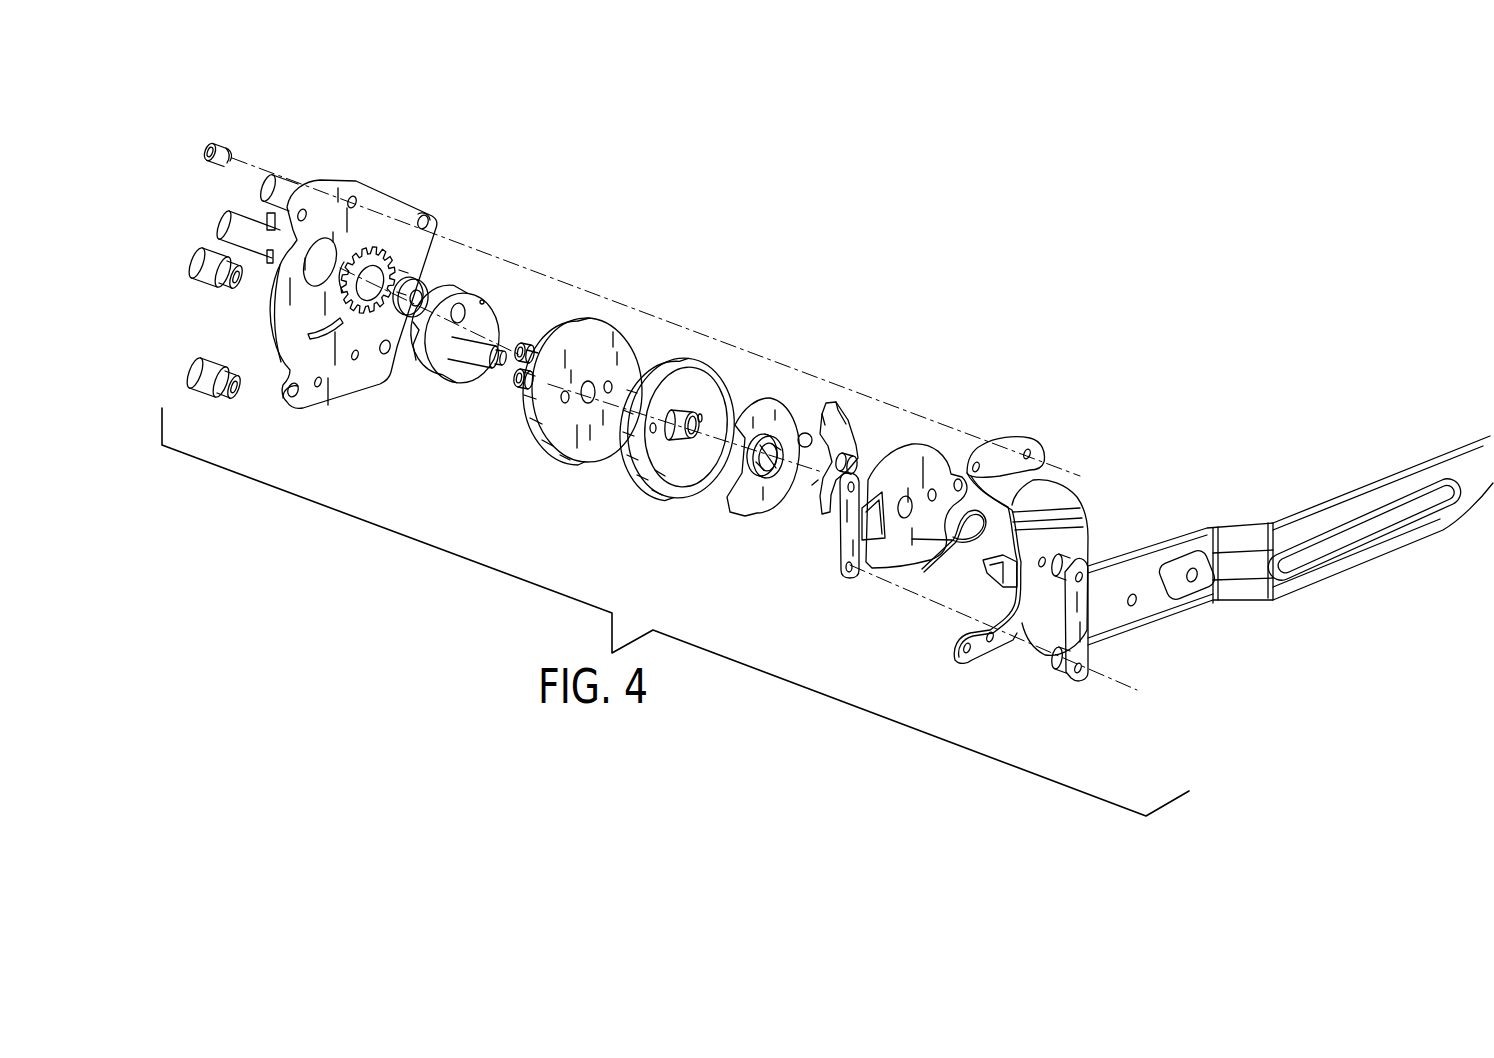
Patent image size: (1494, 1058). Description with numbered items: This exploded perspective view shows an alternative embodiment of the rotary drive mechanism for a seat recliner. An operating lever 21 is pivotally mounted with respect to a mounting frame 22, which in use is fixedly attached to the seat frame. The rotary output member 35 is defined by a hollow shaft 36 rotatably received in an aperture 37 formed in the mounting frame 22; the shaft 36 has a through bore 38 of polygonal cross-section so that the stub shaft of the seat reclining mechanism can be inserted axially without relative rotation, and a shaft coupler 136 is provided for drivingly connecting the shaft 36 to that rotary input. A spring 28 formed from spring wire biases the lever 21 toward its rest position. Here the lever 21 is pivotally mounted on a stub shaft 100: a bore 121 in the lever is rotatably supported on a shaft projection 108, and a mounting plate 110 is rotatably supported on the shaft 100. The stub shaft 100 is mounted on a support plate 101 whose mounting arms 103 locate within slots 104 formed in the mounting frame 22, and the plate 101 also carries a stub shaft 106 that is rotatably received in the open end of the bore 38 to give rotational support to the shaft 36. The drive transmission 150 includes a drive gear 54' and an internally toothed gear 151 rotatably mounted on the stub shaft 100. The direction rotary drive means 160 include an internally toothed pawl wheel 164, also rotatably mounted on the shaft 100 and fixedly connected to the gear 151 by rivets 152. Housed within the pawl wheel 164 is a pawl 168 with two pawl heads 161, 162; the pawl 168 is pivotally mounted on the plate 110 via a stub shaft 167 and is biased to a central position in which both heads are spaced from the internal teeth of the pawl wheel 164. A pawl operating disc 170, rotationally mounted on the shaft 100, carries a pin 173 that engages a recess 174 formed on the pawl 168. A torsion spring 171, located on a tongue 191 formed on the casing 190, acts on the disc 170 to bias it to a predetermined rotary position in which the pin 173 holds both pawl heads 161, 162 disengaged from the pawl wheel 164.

The operating lever 21 is at (1380, 482).
The mounting frame 22 is at (318, 192).
The spring 28 is at (933, 590).
The rotary output member 35 is at (383, 240).
The hollow shaft 36 is at (345, 262).
The aperture 37 is at (308, 271).
The through bore 38 is at (408, 290).
The drive gear 54' is at (417, 238).
The stub shaft 100 is at (455, 345).
The support plate 101 is at (488, 318).
The mounting arms 103 is at (417, 340).
The slots 104 is at (288, 293).
The stub shaft 106 is at (424, 297).
The shaft projection 108 is at (497, 362).
The mounting plate 110 is at (910, 447).
The bore 121 is at (1135, 602).
The shaft coupler 136 is at (205, 216).
The drive transmission 150 is at (685, 228).
The internally toothed gear 151 is at (602, 332).
The rivets 152 is at (530, 346).
The direction rotary drive means 160 is at (690, 510).
The pawl head 161 is at (825, 425).
The pawl head 162 is at (848, 535).
The internally toothed pawl wheel 164 is at (700, 360).
The stub shaft 167 is at (855, 452).
The pawl 168 is at (815, 503).
The pawl operating disc 170 is at (750, 493).
The torsion spring 171 is at (748, 452).
The pin 173 is at (812, 430).
The recess 174 is at (866, 470).
The casing 190 is at (1065, 540).
The tongue 191 is at (985, 582).